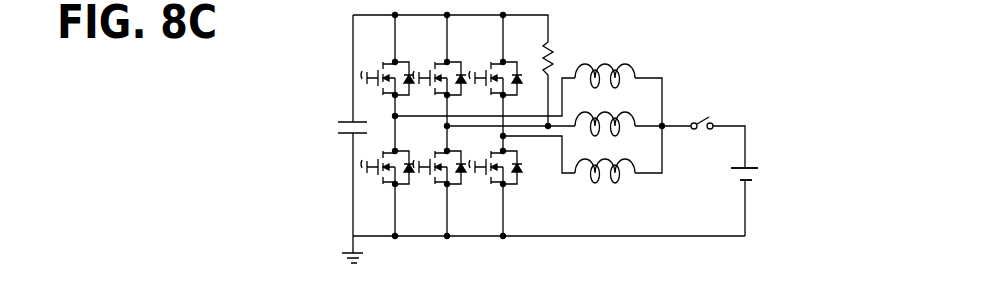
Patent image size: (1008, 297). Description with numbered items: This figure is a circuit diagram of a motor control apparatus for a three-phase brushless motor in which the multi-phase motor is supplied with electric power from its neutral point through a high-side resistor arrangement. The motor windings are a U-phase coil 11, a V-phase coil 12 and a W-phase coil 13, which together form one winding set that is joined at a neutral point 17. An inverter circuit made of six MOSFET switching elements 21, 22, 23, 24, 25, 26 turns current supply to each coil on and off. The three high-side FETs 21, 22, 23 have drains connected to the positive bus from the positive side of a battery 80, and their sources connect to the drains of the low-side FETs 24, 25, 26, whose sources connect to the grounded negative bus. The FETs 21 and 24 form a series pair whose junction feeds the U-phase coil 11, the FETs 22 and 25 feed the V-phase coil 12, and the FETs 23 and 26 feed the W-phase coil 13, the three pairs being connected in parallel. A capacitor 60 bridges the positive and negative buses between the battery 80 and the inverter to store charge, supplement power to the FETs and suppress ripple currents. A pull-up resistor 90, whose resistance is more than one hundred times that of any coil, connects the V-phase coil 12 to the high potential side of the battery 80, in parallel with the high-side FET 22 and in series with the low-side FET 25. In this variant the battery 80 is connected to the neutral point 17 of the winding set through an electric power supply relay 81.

The U-phase coil 11 is at (620, 64).
The V-phase coil 12 is at (622, 113).
The W-phase coil 13 is at (620, 161).
The neutral point 17 is at (664, 123).
The switching element 21 is at (397, 60).
The switching element 22 is at (449, 60).
The switching element 23 is at (505, 60).
The switching element 24 is at (398, 186).
The switching element 25 is at (450, 186).
The switching element 26 is at (506, 186).
The capacitor 60 is at (343, 120).
The battery 80 is at (750, 166).
The electric power supply relay 81 is at (712, 121).
The pull-up resistor 90 is at (551, 54).